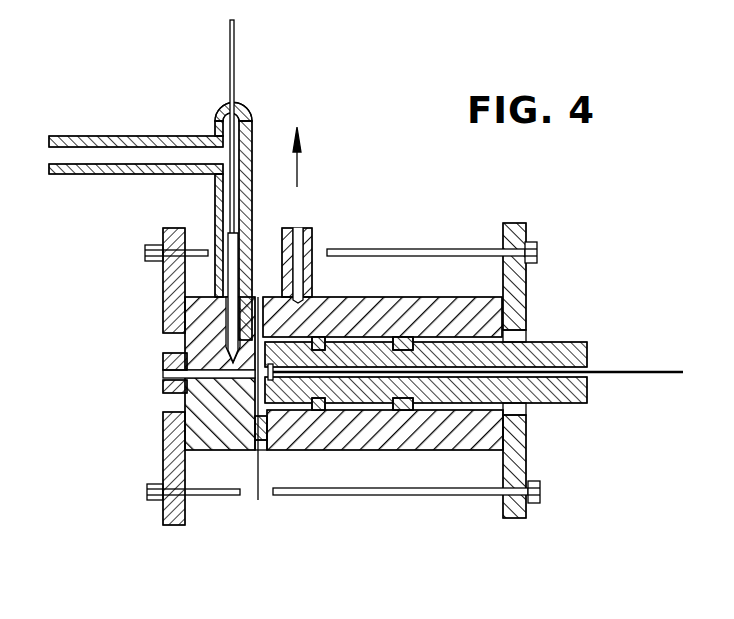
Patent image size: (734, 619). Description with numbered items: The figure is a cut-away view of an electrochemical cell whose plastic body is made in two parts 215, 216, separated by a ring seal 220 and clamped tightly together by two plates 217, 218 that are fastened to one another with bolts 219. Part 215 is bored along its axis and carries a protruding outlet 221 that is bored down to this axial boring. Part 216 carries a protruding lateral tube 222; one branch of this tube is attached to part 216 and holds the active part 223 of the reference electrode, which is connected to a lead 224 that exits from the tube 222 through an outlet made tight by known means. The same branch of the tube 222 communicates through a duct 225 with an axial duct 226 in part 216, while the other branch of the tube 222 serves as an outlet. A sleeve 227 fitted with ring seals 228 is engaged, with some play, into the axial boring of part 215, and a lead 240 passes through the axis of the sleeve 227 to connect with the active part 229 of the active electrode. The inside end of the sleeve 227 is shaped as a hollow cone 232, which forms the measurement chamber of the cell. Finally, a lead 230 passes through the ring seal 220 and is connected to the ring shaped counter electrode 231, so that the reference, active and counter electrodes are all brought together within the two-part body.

The plastic body part 215 is at (418, 432).
The plastic body part 216 is at (216, 444).
The plate 217 is at (520, 518).
The plate 218 is at (177, 523).
The bolts 219 is at (445, 249).
The ring seal 220 is at (258, 292).
The protruding outlet 221 is at (313, 240).
The protruding lateral tube 222 is at (250, 142).
The active part of the reference electrode 223 is at (235, 250).
The lead 224 is at (236, 63).
The duct 225 is at (232, 362).
The axial duct 226 is at (163, 374).
The sleeve 227 is at (560, 341).
The ring seals 228 is at (407, 334).
The active part of the active electrode 229 is at (263, 425).
The lead 230 is at (258, 500).
The ring shaped counter electrode 231 is at (264, 431).
The hollow cone 232 is at (257, 398).
The lead 240 is at (640, 373).